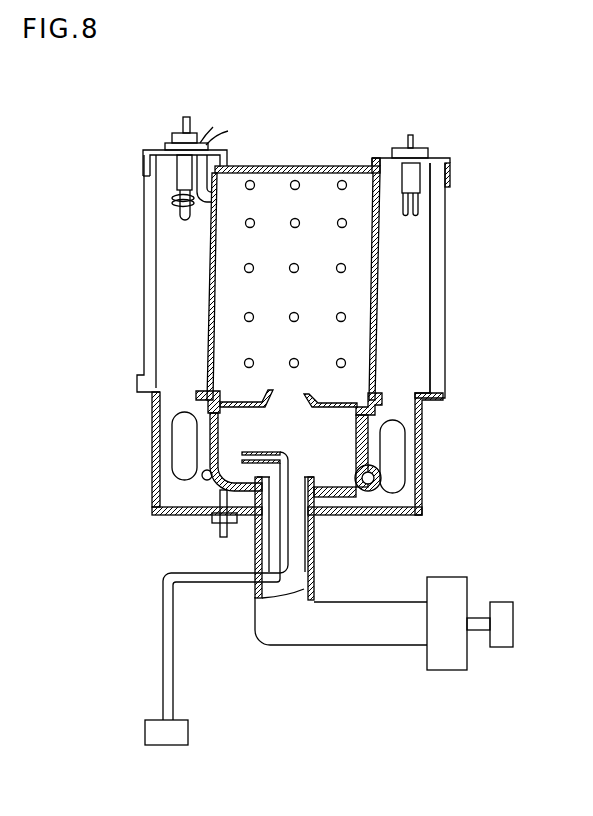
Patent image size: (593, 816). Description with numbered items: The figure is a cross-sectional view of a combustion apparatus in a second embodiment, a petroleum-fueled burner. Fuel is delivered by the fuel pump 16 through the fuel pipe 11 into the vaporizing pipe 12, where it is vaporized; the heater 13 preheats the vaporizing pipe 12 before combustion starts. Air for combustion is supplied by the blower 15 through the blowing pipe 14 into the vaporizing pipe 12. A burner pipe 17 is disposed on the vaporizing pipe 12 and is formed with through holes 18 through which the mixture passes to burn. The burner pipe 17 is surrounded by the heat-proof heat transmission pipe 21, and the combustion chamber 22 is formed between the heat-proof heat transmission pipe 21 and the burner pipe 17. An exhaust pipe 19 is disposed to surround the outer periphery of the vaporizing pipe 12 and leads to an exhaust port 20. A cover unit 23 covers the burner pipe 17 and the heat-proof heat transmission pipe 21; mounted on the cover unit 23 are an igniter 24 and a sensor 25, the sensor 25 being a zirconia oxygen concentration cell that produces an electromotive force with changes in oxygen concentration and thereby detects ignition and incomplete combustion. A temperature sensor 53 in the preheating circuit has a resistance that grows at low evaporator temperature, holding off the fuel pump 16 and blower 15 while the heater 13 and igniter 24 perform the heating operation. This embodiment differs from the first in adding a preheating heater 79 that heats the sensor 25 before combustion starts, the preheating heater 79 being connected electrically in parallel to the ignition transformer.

The fuel pipe 11 is at (170, 627).
The vaporizing pipe 12 is at (362, 455).
The heater 13 is at (377, 487).
The blowing pipe 14 is at (348, 638).
The blower 15 is at (453, 663).
The fuel pump 16 is at (170, 740).
The burner pipe 17 is at (377, 302).
The through hole 18 is at (378, 276).
The exhaust pipe 19 is at (157, 398).
The exhaust port 20 is at (180, 450).
The heat-proof heat transmission pipe 21 is at (143, 285).
The combustion chamber 22 is at (168, 250).
The cover unit 23 is at (311, 166).
The igniter 24 is at (412, 188).
The sensor 25 is at (182, 183).
The temperature sensor 53 is at (220, 505).
The preheating heater 79 is at (173, 200).